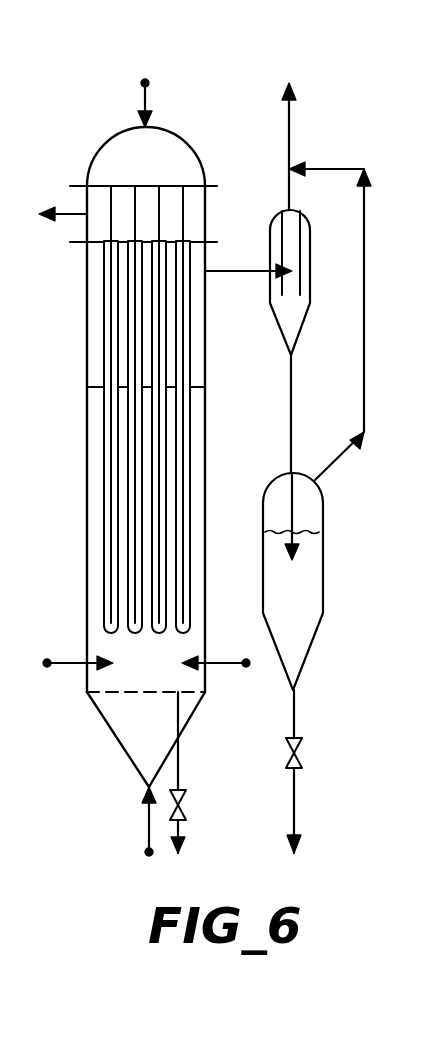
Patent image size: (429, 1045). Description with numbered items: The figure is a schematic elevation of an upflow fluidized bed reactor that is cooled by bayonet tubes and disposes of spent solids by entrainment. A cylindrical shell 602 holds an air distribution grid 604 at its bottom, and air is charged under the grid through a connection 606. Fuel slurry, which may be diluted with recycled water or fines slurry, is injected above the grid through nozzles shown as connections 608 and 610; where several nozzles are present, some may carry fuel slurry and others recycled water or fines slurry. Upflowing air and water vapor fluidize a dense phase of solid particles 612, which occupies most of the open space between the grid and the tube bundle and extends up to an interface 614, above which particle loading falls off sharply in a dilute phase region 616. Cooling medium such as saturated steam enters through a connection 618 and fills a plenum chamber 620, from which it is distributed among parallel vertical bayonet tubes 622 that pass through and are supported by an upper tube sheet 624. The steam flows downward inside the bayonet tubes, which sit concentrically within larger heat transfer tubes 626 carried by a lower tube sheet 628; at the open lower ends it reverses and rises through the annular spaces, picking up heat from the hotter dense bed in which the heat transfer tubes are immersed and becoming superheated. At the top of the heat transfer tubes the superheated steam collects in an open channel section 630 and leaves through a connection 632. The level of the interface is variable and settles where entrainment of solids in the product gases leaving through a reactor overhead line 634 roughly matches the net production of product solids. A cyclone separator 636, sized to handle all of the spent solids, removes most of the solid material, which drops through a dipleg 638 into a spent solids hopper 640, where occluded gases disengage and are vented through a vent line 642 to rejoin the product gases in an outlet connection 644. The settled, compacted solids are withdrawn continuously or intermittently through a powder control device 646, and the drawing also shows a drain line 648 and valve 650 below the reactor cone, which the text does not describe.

The cylindrical shell 602 is at (87, 512).
The air distribution grid 604 is at (130, 693).
The connection 606 is at (147, 827).
The connection 608 is at (70, 664).
The connection 610 is at (228, 664).
The dense phase of solid particles 612 is at (130, 652).
The interface 614 is at (93, 387).
The dilute phase region 616 is at (97, 328).
The connection 618 is at (145, 103).
The plenum chamber 620 is at (125, 150).
The bayonet tubes 622 is at (181, 219).
The upper tube sheet 624 is at (118, 185).
The heat transfer tubes 626 is at (188, 356).
The lower tube sheet 628 is at (103, 243).
The open channel section 630 is at (168, 207).
The connection 632 is at (70, 217).
The reactor overhead line 634 is at (236, 273).
The cyclone separator 636 is at (274, 323).
The dipleg 638 is at (291, 452).
The spent solids hopper 640 is at (263, 562).
The vent line 642 is at (364, 388).
The outlet connection 644 is at (289, 135).
The powder control device 646 is at (303, 750).
The drain line 648 is at (180, 767).
The drain valve 650 is at (184, 813).